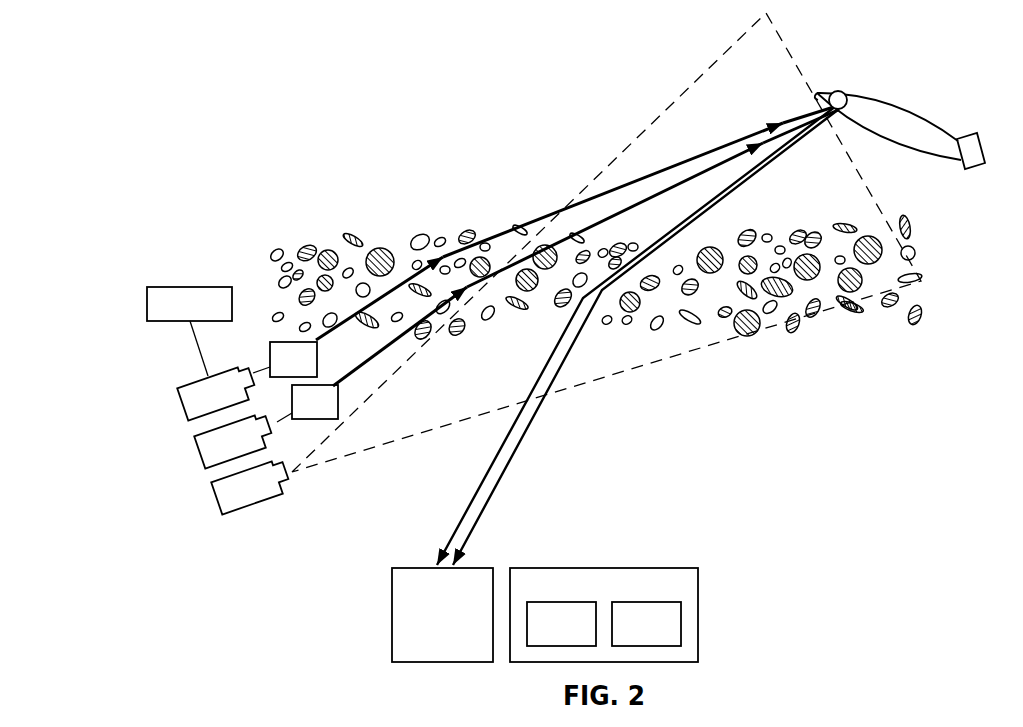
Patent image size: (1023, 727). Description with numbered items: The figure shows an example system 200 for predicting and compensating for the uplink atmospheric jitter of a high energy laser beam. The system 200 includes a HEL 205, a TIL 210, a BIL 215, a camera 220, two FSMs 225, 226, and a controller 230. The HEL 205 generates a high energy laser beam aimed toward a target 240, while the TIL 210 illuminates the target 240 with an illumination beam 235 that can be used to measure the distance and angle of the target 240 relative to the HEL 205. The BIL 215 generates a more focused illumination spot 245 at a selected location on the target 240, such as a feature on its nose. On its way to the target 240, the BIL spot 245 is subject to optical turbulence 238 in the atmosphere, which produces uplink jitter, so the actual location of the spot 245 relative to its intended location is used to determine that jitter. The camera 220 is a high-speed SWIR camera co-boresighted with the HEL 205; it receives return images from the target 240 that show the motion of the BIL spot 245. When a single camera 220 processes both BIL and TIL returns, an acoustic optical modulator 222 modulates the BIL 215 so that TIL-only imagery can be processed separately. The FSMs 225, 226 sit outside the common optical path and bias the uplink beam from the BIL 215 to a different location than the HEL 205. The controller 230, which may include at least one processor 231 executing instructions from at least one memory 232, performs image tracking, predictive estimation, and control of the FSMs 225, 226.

The system 200 is at (400, 103).
The HEL 205 is at (197, 455).
The TIL 210 is at (213, 500).
The BIL 215 is at (178, 407).
The camera 220 is at (392, 615).
The acoustic optical modulator 222 is at (147, 303).
The FSM 225 is at (322, 384).
The FSM 226 is at (270, 352).
The controller 230 is at (637, 615).
The processor 231 is at (561, 624).
The memory 232 is at (646, 624).
The illumination beam 235 is at (662, 118).
The optical turbulence 238 is at (362, 240).
The target 240 is at (895, 105).
The BIL spot 245 is at (857, 91).